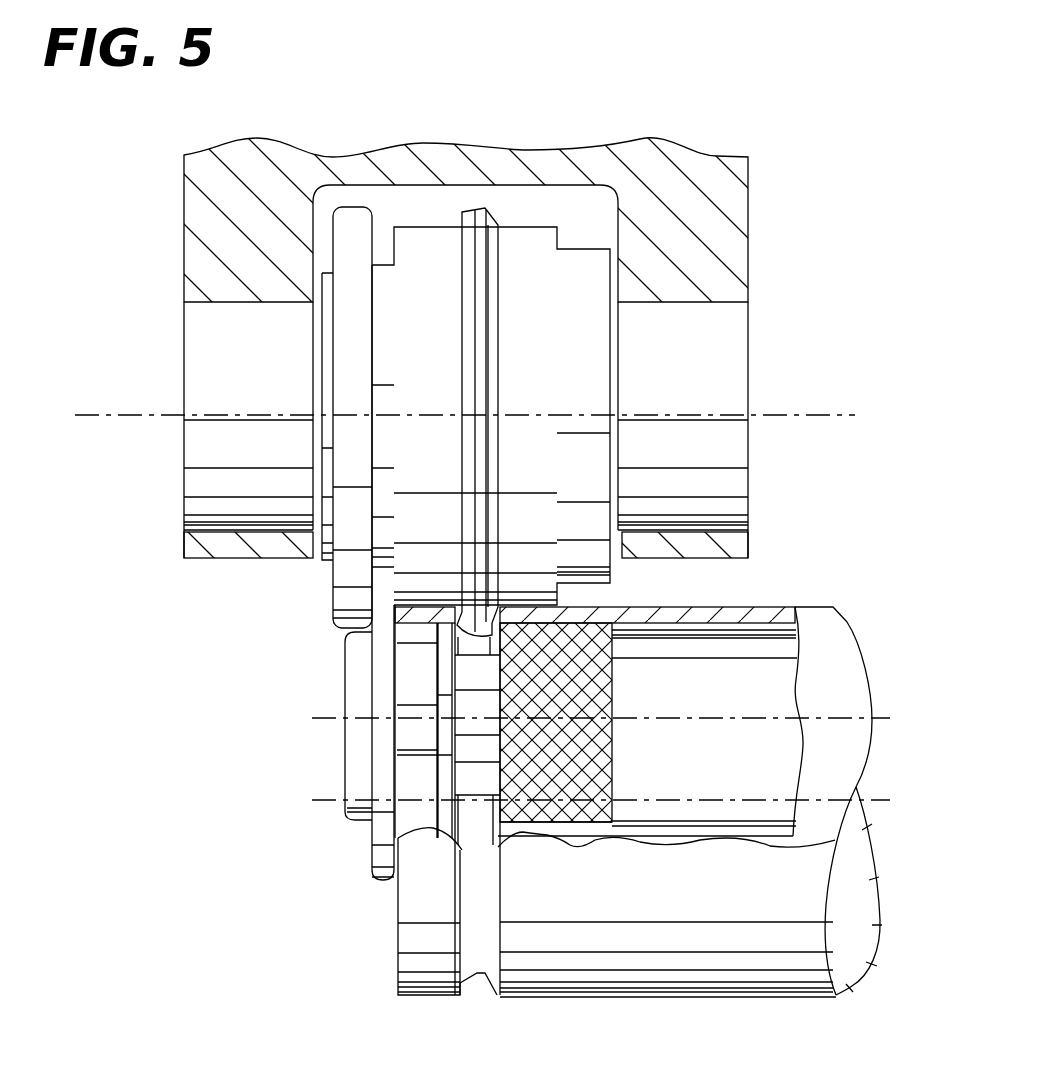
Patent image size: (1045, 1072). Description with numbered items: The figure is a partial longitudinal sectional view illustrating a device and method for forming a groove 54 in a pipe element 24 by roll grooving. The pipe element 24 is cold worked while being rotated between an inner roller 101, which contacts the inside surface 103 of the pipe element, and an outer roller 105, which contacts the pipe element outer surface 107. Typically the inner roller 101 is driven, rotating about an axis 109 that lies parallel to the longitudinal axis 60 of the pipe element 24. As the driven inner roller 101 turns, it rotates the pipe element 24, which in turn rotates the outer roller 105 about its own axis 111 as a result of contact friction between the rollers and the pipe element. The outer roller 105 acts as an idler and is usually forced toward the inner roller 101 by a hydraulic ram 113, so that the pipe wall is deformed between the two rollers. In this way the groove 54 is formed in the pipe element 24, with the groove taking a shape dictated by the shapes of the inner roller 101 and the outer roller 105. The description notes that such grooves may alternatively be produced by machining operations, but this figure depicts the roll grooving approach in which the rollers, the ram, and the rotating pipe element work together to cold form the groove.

The hydraulic ram 113 is at (304, 157).
The axis 111 is at (125, 410).
The outer roller 105 is at (340, 594).
The inner roller 101 is at (352, 746).
The outer surface 107 is at (810, 606).
The inside surface 103 is at (673, 628).
The axis 109 is at (640, 720).
The longitudinal axis 60 is at (688, 836).
The groove 54 is at (466, 996).
The pipe element 24 is at (663, 975).